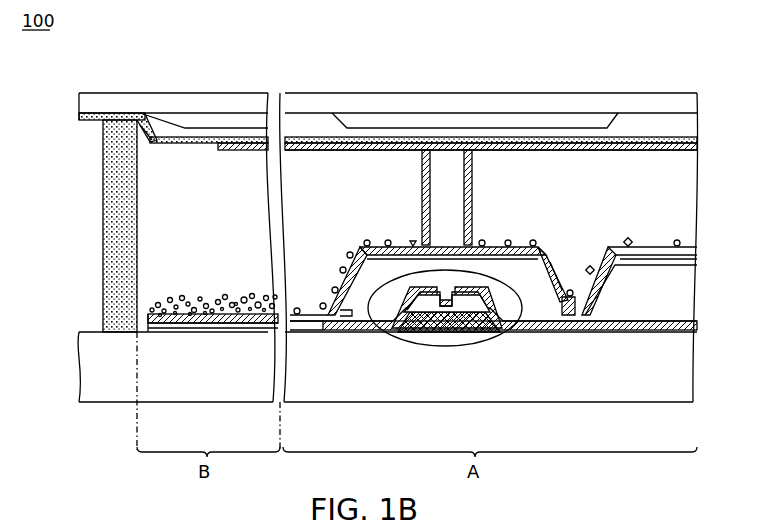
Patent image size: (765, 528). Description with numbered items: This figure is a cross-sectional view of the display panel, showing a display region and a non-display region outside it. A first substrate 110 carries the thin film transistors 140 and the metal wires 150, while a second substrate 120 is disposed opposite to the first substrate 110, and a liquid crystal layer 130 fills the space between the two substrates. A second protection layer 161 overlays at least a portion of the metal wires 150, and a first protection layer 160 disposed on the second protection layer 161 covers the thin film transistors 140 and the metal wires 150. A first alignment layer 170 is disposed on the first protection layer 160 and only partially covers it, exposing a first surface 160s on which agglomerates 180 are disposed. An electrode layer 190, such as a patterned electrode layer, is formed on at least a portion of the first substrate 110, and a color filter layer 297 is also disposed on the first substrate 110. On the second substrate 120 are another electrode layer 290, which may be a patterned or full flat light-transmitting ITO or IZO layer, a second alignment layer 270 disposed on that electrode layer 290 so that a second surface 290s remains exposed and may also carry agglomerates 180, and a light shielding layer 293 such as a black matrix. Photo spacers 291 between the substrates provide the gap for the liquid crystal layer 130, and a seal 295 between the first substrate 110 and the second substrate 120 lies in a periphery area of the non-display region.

The first substrate 110 is at (567, 380).
The second substrate 120 is at (86, 105).
The liquid crystal layer 130 is at (317, 178).
The thin film transistor 140 is at (440, 345).
The metal wire 150 is at (483, 334).
The first protection layer 160 is at (699, 323).
The first surface 160s is at (156, 316).
The second protection layer 161 is at (95, 327).
The first alignment layer 170 is at (699, 250).
The agglomerates 180 is at (147, 310).
The electrode layer 190 is at (699, 263).
The second alignment layer 270 is at (690, 146).
The electrode layer 290 is at (80, 117).
The second surface 290s is at (152, 140).
The photo spacer 291 is at (450, 158).
The light shielding layer 293 is at (200, 120).
The seal 295 is at (118, 220).
The color filter layer 297 is at (352, 334).